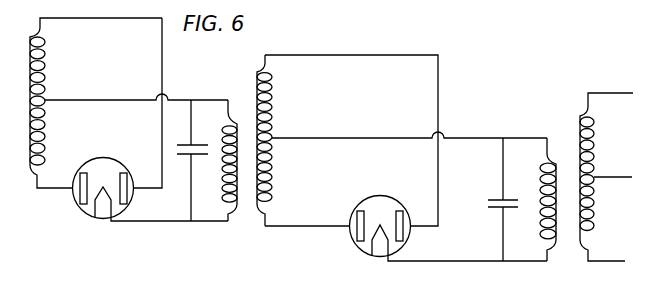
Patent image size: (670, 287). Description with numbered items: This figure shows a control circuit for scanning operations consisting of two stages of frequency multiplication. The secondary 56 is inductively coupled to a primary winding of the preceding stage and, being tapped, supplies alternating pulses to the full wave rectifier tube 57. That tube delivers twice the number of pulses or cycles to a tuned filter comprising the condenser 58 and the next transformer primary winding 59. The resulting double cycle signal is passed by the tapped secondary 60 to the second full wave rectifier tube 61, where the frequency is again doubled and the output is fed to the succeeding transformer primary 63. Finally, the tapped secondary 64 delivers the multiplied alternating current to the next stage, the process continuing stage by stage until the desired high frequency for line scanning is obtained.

The secondary 56 is at (47, 77).
The full wave rectifier tube 57 is at (101, 158).
The condenser 58 is at (195, 156).
The transformer primary winding 59 is at (240, 211).
The tapped secondary 60 is at (256, 90).
The full wave rectifier tube 61 is at (390, 198).
The transformer primary 63 is at (555, 248).
The tapped secondary 64 is at (580, 125).